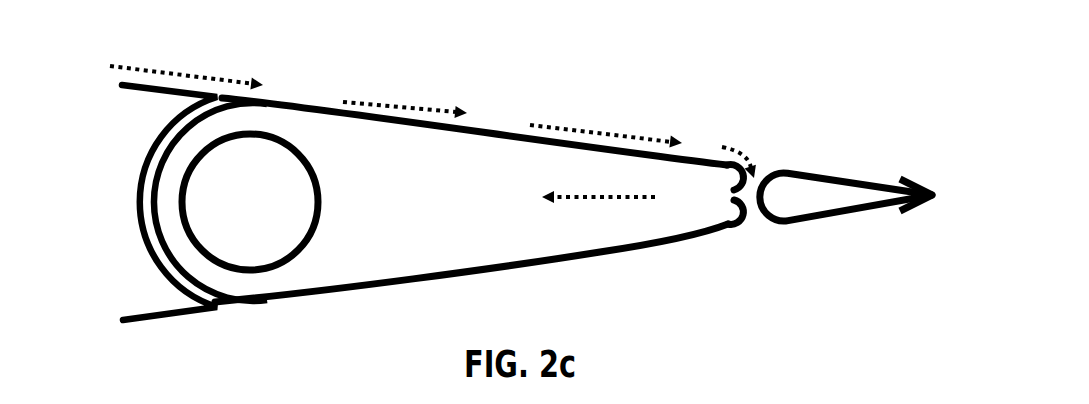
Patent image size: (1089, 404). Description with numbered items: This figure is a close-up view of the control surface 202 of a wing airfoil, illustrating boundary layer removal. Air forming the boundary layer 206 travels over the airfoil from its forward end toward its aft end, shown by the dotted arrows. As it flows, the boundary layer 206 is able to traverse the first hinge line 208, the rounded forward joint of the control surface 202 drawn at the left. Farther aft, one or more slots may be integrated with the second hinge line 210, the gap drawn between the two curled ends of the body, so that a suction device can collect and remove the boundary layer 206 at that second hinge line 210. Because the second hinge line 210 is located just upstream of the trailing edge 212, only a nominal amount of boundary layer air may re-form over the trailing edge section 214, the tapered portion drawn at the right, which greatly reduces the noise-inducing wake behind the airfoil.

The control surface 202 is at (968, 102).
The boundary layer 206 is at (613, 138).
The first hinge line 208 is at (225, 312).
The second hinge line 210 is at (755, 235).
The trailing edge 212 is at (928, 187).
The trailing edge section 214 is at (943, 205).